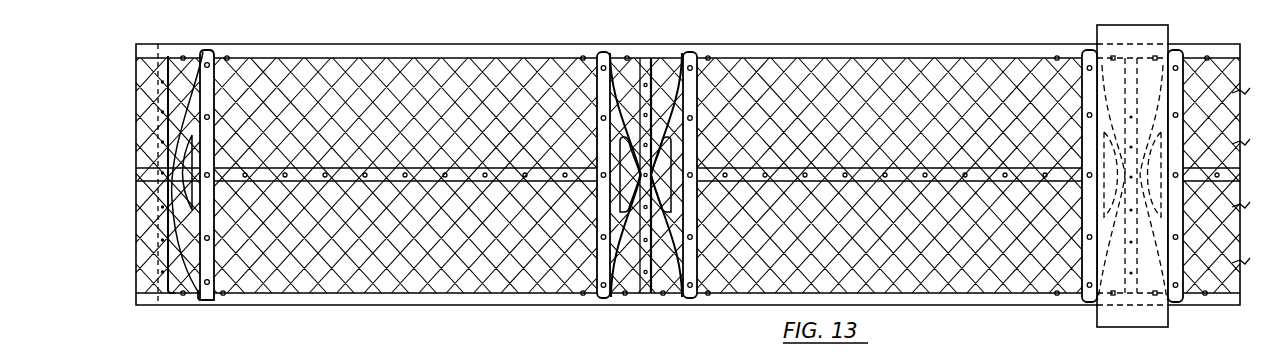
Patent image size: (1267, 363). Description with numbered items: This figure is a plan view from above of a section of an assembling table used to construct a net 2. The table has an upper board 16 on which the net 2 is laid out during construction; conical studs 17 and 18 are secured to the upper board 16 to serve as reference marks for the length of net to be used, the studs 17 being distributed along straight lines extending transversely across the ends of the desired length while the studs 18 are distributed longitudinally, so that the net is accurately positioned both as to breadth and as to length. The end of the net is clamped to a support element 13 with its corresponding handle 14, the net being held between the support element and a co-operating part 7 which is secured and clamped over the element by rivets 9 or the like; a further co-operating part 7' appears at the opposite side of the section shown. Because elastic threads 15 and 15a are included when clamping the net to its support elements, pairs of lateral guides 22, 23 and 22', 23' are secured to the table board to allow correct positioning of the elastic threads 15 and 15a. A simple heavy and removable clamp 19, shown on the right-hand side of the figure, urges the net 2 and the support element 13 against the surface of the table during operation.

The net 2 is at (361, 264).
The co-operating part 7 is at (1186, 191).
The end post 7' is at (1077, 191).
The rivets 9 is at (201, 294).
The support element 13 is at (205, 255).
The handle 14 is at (158, 190).
The elastic thread 15 is at (453, 57).
The elastic thread 15a is at (505, 294).
The upper board 16 is at (789, 57).
The studs 17 is at (135, 260).
The studs 18 is at (445, 177).
The clamp 19 is at (1112, 35).
The lateral guide 22 is at (634, 158).
The lateral guide 22' is at (626, 252).
The lateral guide 23 is at (646, 156).
The lateral guide 23' is at (645, 233).